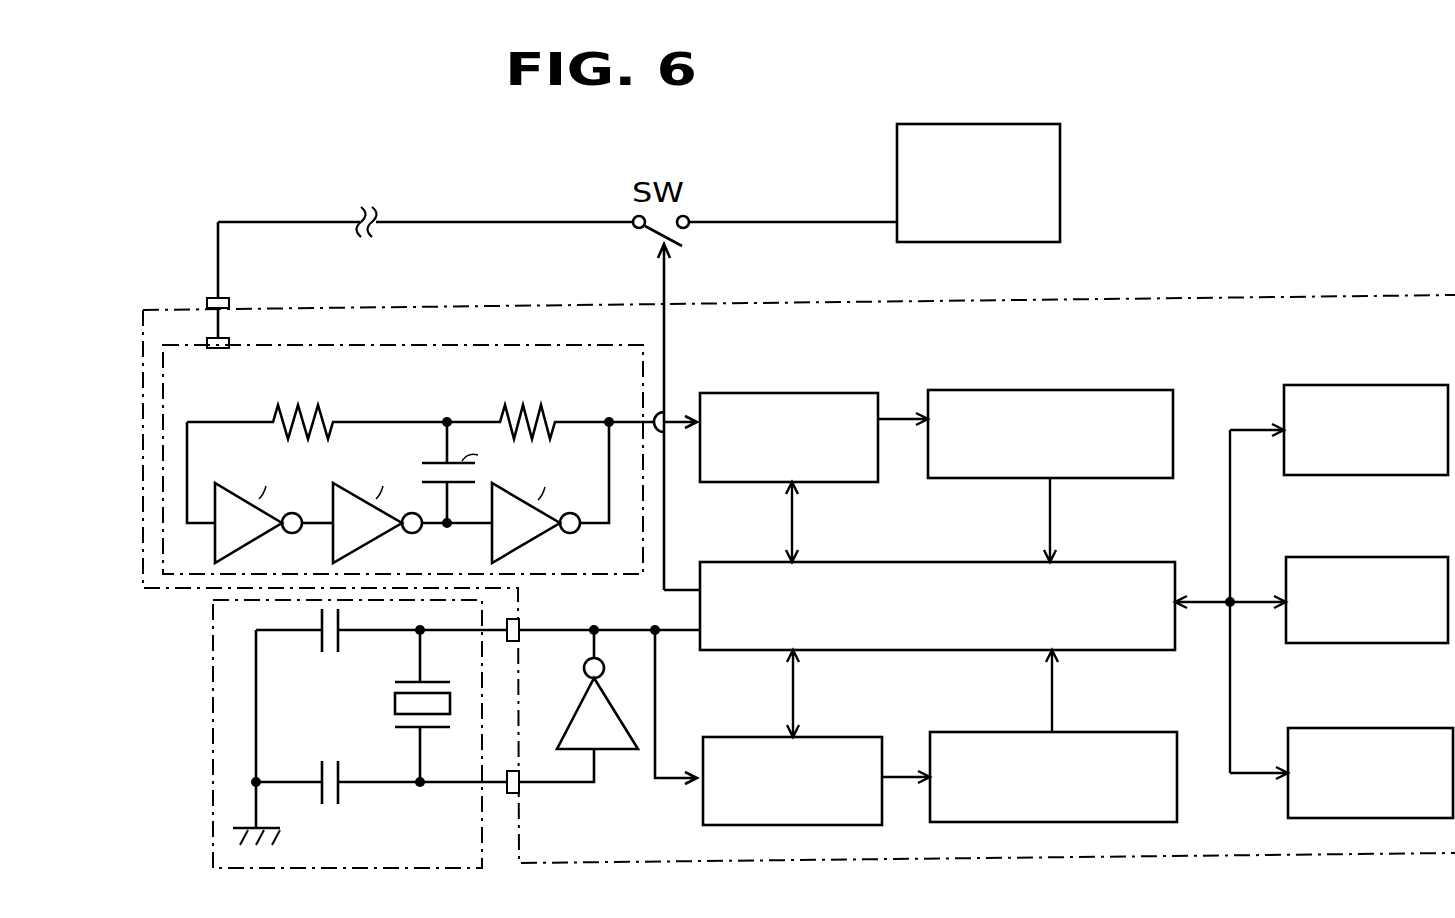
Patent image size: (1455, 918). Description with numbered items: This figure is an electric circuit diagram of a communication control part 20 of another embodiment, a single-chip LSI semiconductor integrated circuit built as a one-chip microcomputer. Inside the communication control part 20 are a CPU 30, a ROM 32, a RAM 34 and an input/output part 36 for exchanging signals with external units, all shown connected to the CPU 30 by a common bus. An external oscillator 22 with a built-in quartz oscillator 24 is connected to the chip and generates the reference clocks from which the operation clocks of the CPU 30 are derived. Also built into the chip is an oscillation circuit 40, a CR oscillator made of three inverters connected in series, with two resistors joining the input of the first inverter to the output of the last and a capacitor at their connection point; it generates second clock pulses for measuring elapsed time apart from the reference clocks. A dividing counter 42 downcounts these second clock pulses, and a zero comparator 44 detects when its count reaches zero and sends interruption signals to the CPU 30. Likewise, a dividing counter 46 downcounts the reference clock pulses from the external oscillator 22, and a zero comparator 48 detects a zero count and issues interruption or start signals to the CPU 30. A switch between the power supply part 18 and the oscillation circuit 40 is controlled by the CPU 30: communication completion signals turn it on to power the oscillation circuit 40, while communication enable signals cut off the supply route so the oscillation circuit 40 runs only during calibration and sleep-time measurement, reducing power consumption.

The power supply part 18 is at (1060, 185).
The communication control part 20 is at (1128, 298).
The external oscillator 22 is at (339, 734).
The quartz oscillator 24 is at (395, 700).
The CPU 30 is at (1085, 562).
The ROM 32 is at (1363, 385).
The RAM 34 is at (1365, 557).
The input/output part 36 is at (1367, 728).
The oscillation circuit 40 is at (585, 574).
The dividing counter 42 is at (787, 393).
The zero comparator 44 is at (1065, 390).
The dividing counter 46 is at (872, 708).
The zero comparator 48 is at (1092, 732).